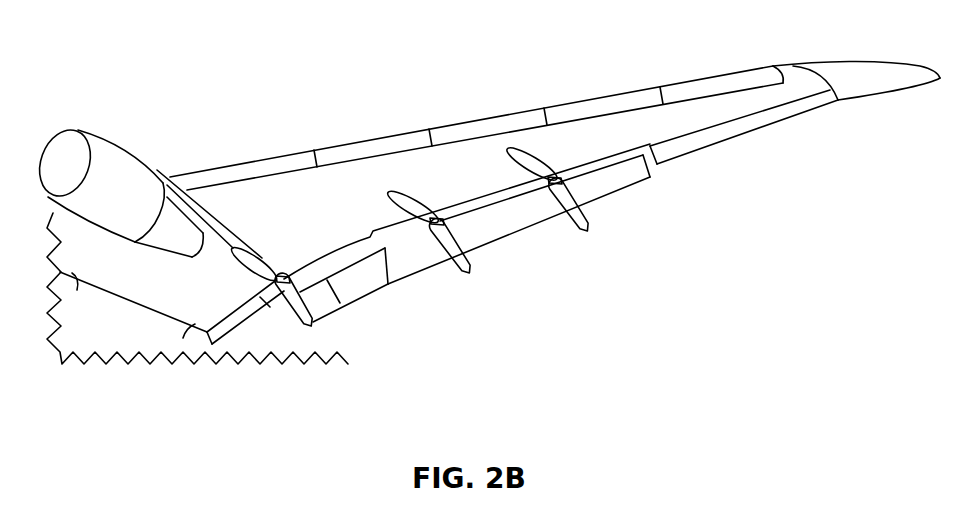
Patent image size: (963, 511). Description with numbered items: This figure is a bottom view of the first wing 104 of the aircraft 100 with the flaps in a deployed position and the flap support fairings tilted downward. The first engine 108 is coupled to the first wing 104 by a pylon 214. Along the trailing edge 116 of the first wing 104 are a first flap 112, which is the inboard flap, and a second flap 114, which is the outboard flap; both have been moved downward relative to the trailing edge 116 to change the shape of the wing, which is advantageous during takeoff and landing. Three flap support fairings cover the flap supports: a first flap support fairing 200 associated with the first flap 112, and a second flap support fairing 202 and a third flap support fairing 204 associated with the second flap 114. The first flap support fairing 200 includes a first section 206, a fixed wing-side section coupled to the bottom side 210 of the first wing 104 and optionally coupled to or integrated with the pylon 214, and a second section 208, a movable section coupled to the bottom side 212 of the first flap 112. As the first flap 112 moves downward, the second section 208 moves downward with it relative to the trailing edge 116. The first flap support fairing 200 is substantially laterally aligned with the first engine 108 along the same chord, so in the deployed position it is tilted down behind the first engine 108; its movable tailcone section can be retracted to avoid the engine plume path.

The aircraft 100 is at (149, 56).
The first wing 104 is at (398, 130).
The first engine 108 is at (117, 157).
The first flap 112 is at (370, 283).
The second flap 114 is at (517, 215).
The trailing edge 116 is at (370, 244).
The first flap support fairing 200 is at (289, 324).
The second flap support fairing 202 is at (481, 260).
The third flap support fairing 204 is at (604, 212).
The first section 206 is at (251, 268).
The second section 208 is at (318, 326).
The bottom side 210 is at (553, 150).
The bottom side 212 is at (241, 347).
The pylon 214 is at (177, 189).